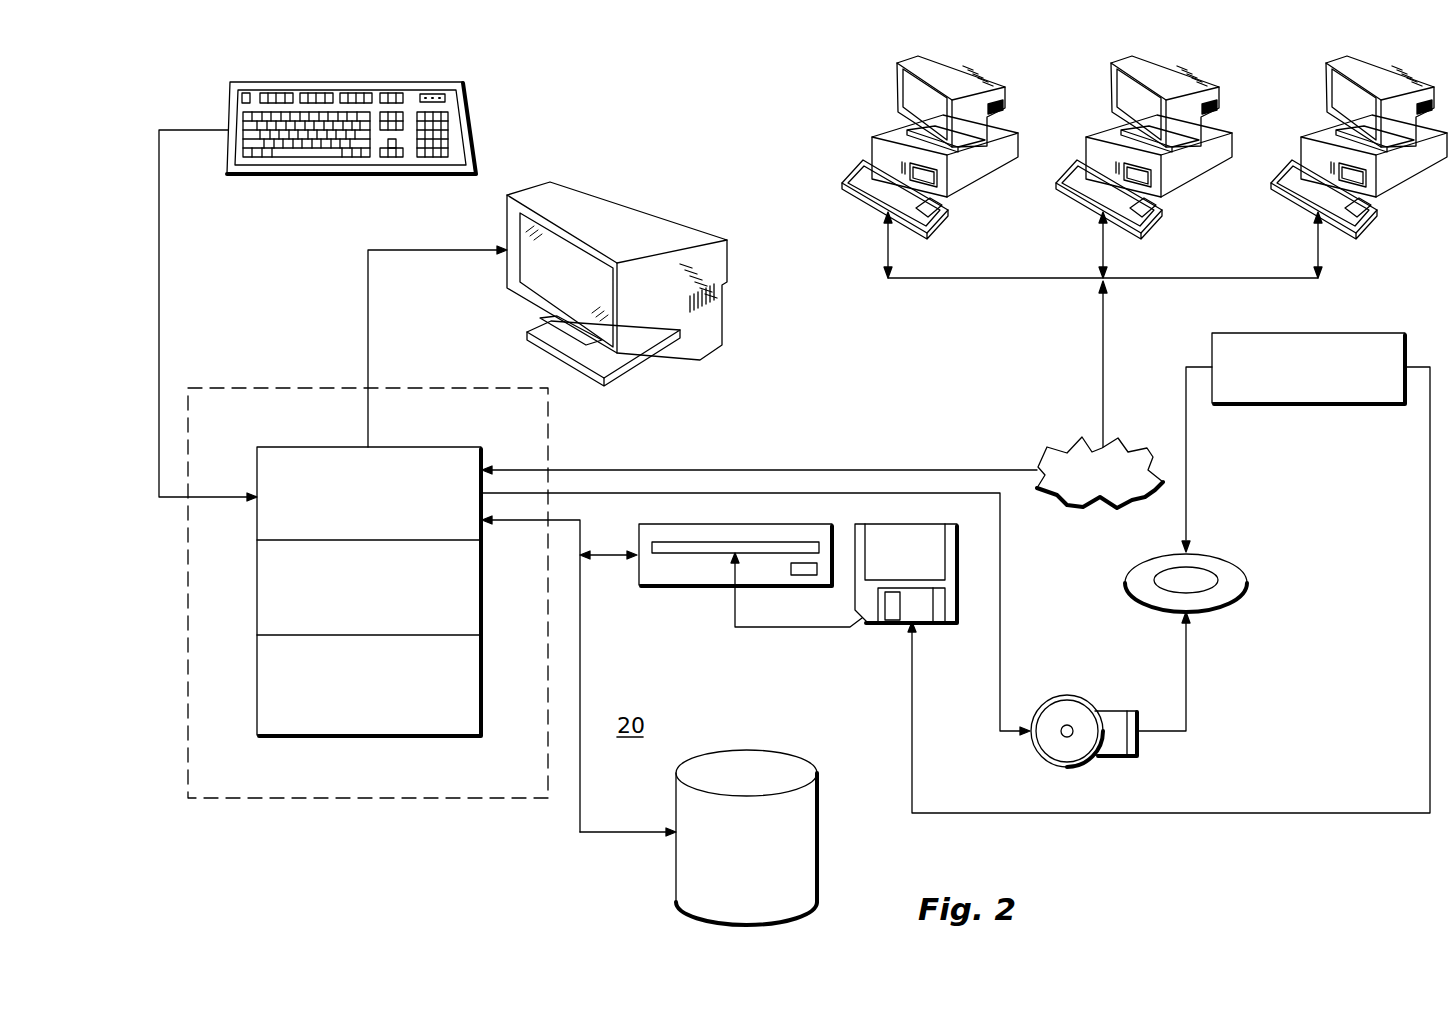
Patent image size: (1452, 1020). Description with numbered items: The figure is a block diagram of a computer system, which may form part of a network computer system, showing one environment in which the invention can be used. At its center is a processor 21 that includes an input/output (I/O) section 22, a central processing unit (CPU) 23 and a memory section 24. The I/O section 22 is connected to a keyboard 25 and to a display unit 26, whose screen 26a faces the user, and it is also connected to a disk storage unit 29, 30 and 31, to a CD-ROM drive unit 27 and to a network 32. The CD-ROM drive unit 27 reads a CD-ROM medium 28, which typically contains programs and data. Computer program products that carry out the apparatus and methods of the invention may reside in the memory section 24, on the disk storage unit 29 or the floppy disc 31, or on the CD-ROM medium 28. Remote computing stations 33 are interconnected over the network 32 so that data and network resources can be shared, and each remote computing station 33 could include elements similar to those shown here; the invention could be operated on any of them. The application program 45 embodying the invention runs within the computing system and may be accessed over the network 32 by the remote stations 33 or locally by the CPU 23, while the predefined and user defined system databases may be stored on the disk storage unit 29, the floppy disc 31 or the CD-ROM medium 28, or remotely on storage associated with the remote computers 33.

The processor 21 is at (262, 388).
The input/output (I/O) section 22 is at (302, 447).
The central processing unit (CPU) 23 is at (482, 588).
The memory section 24 is at (482, 683).
The keyboard 25 is at (353, 82).
The display unit 26 is at (591, 271).
The display screen 26a is at (550, 286).
The CD-ROM drive unit 27 is at (1108, 710).
The CD-ROM medium 28 is at (1228, 537).
The disk storage unit 29 is at (817, 870).
The disk storage unit 30 is at (687, 586).
The floppy disc 31 is at (935, 625).
The network 32 is at (1130, 447).
The remote computing stations 33 is at (897, 90).
The application program 45 is at (1360, 333).